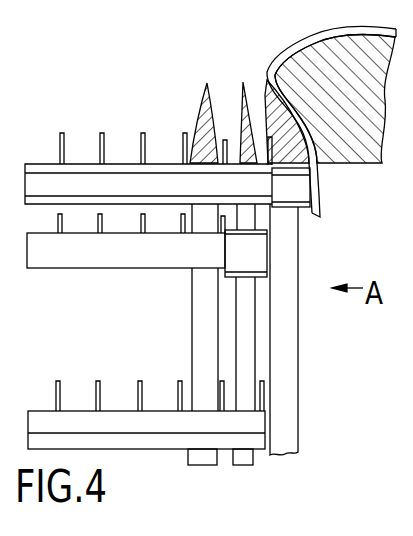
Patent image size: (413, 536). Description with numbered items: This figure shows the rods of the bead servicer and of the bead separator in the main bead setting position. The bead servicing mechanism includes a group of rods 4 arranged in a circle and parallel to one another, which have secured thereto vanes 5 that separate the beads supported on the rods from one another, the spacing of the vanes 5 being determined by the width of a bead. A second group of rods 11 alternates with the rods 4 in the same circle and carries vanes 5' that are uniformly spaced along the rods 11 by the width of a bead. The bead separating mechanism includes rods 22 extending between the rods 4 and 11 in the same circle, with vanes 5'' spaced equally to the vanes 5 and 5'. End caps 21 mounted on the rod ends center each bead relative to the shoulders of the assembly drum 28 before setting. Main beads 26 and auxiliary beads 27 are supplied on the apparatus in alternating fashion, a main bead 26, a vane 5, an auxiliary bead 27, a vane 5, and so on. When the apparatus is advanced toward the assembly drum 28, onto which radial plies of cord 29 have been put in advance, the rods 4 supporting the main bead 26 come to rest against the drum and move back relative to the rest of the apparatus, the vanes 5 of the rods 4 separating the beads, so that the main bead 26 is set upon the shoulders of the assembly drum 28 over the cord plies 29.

The rods 4 is at (118, 196).
The vanes 5 is at (166, 130).
The vanes 5' is at (141, 216).
The vanes 5'' is at (160, 374).
The rods 11 is at (92, 265).
The end caps 21 is at (255, 256).
The rods 22 is at (122, 422).
The main bead 26 is at (196, 119).
The auxiliary bead 27 is at (239, 116).
The assembly drum 28 is at (352, 144).
The radial plies of cord 29 is at (322, 165).